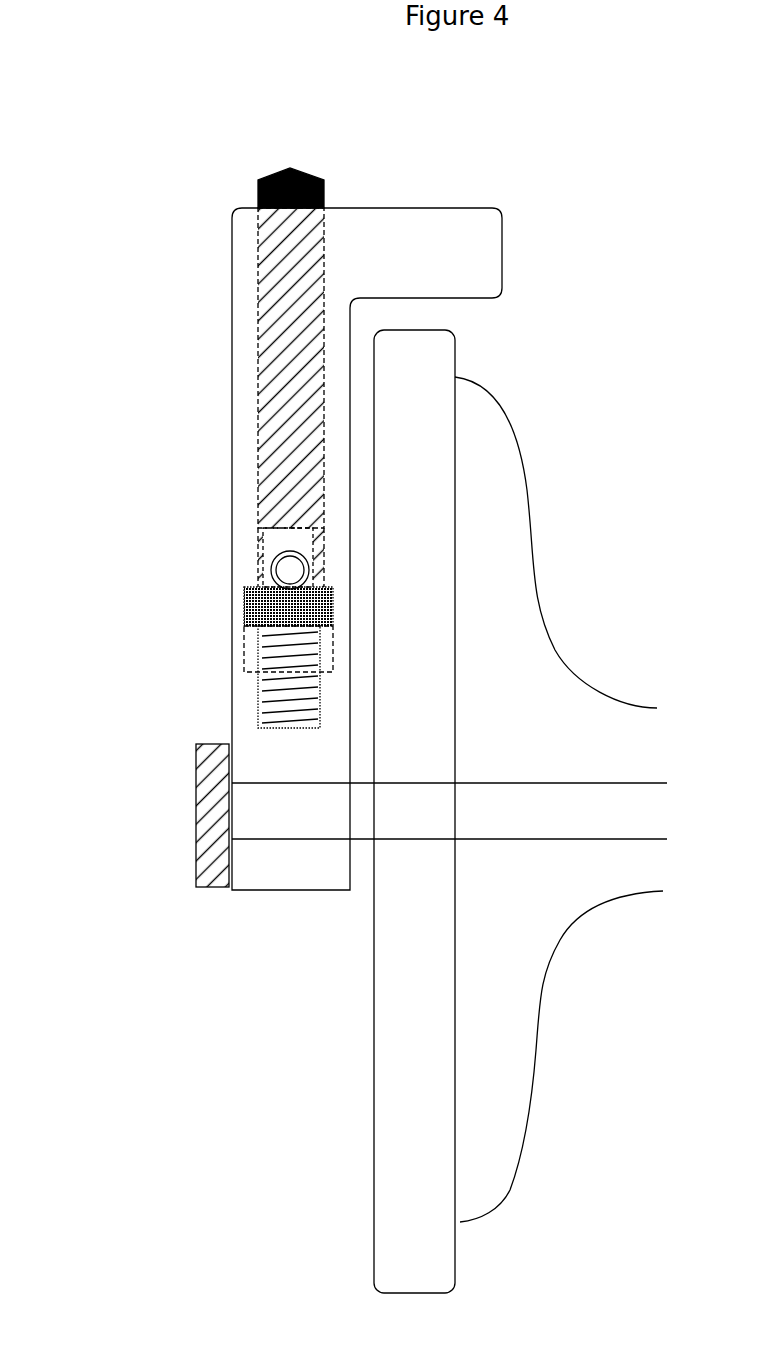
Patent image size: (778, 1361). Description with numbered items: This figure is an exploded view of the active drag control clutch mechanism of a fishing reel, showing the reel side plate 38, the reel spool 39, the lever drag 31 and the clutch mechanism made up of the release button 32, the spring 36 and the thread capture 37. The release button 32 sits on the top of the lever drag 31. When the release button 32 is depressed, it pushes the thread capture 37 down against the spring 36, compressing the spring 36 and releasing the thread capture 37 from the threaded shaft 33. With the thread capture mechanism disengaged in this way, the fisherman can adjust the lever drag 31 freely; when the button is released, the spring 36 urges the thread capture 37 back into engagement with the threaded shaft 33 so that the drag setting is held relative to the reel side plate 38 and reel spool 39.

The lever drag 31 is at (397, 255).
The release button 32 is at (262, 180).
The threaded shaft 33 is at (277, 572).
The spring 36 is at (283, 695).
The thread capture 37 is at (283, 608).
The reel side plate 38 is at (413, 492).
The reel spool 39 is at (517, 617).